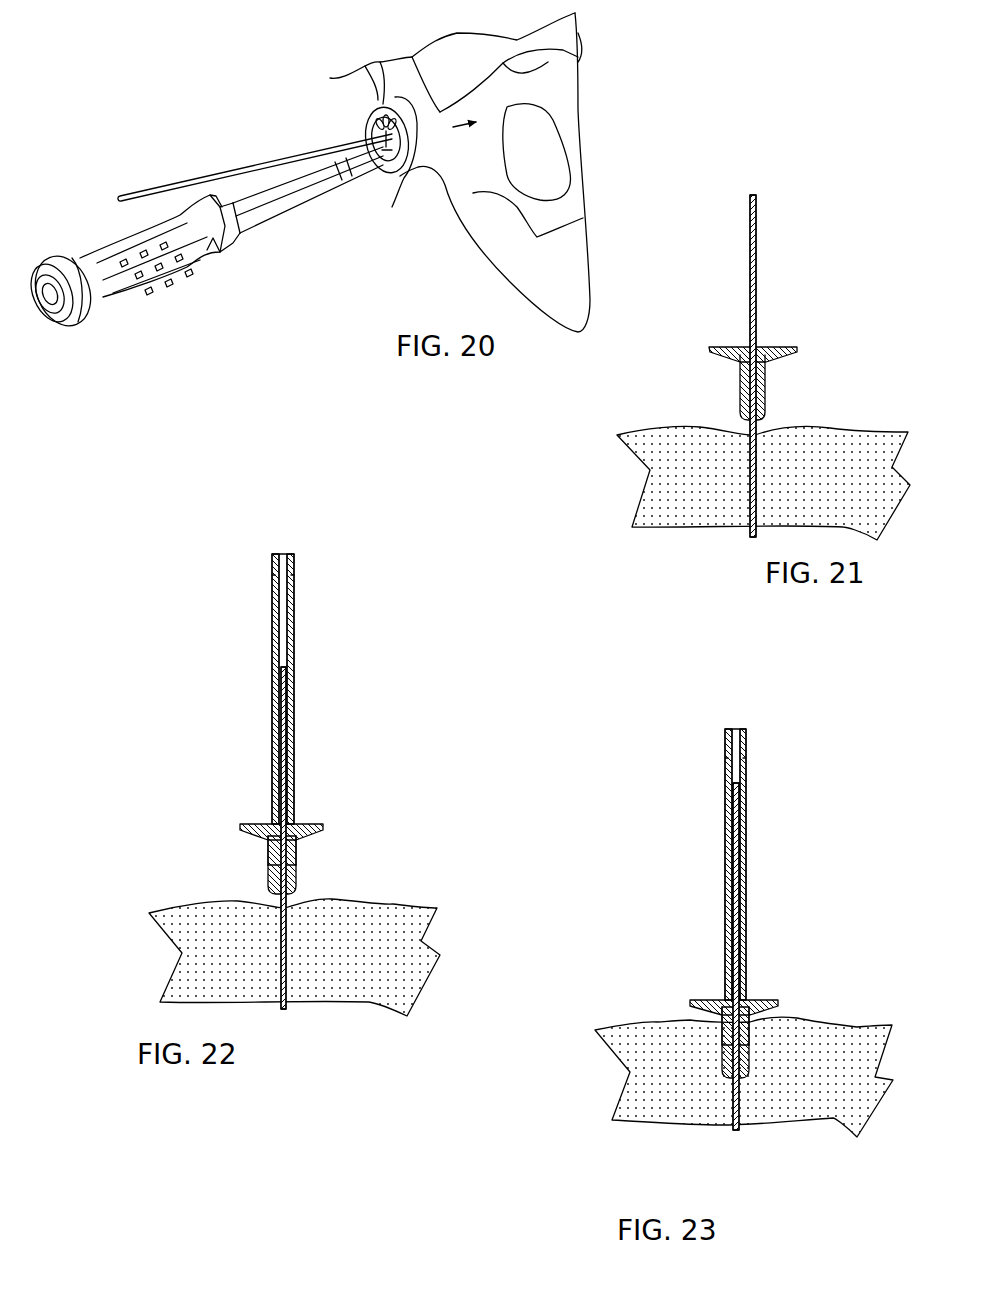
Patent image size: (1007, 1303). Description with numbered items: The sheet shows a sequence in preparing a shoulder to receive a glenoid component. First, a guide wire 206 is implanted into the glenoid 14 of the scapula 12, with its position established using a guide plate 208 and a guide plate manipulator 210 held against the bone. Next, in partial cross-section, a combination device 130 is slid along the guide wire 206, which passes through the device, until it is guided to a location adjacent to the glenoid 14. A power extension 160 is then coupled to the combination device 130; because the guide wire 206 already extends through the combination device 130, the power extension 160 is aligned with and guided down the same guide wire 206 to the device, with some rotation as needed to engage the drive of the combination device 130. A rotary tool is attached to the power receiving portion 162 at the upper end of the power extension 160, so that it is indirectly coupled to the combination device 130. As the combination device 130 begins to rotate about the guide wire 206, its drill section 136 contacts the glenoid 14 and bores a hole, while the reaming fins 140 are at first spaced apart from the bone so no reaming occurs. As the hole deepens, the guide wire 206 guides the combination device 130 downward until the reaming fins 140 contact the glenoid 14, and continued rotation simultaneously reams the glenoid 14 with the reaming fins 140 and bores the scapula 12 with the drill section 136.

In FIG. 20, the scapula 12 is at (578, 112).
In FIG. 21, the scapula 12 is at (580, 510).
In FIG. 23, the scapula 12 is at (578, 1082).
In FIG. 20, the glenoid 14 is at (340, 82).
In FIG. 21, the glenoid 14 is at (830, 434).
In FIG. 22, the glenoid 14 is at (355, 908).
In FIG. 23, the glenoid 14 is at (863, 1031).
In FIG. 21, the combination device 130 is at (767, 378).
In FIG. 22, the combination device 130 is at (295, 844).
In FIG. 23, the combination device 130 is at (720, 1023).
In FIG. 22, the drill section 136 is at (271, 880).
In FIG. 23, the drill section 136 is at (722, 1058).
In FIG. 22, the reaming fins 140 is at (266, 845).
In FIG. 23, the reaming fins 140 is at (716, 1020).
In FIG. 22, the power extension 160 is at (297, 634).
In FIG. 22, the power receiving portion 162 is at (294, 556).
In FIG. 20, the guide wire 206 is at (240, 168).
In FIG. 21, the guide wire 206 is at (757, 282).
In FIG. 22, the guide wire 206 is at (283, 1012).
In FIG. 23, the guide wire 206 is at (736, 1132).
In FIG. 20, the guide plate 208 is at (400, 172).
In FIG. 20, the guide plate manipulator 210 is at (202, 258).